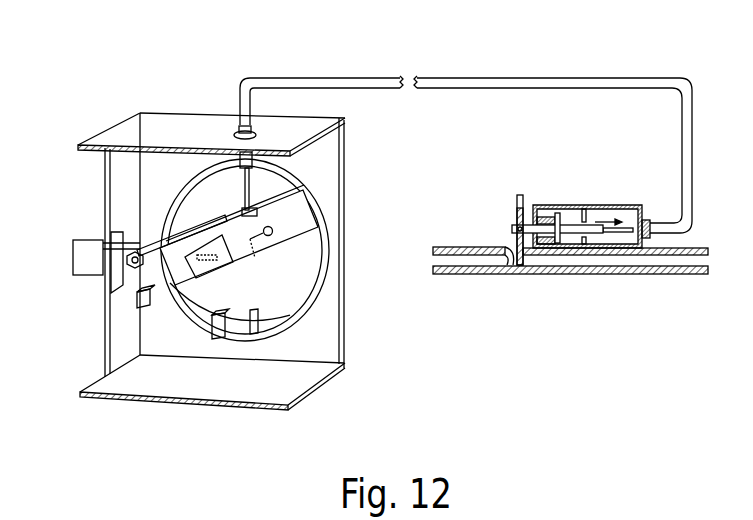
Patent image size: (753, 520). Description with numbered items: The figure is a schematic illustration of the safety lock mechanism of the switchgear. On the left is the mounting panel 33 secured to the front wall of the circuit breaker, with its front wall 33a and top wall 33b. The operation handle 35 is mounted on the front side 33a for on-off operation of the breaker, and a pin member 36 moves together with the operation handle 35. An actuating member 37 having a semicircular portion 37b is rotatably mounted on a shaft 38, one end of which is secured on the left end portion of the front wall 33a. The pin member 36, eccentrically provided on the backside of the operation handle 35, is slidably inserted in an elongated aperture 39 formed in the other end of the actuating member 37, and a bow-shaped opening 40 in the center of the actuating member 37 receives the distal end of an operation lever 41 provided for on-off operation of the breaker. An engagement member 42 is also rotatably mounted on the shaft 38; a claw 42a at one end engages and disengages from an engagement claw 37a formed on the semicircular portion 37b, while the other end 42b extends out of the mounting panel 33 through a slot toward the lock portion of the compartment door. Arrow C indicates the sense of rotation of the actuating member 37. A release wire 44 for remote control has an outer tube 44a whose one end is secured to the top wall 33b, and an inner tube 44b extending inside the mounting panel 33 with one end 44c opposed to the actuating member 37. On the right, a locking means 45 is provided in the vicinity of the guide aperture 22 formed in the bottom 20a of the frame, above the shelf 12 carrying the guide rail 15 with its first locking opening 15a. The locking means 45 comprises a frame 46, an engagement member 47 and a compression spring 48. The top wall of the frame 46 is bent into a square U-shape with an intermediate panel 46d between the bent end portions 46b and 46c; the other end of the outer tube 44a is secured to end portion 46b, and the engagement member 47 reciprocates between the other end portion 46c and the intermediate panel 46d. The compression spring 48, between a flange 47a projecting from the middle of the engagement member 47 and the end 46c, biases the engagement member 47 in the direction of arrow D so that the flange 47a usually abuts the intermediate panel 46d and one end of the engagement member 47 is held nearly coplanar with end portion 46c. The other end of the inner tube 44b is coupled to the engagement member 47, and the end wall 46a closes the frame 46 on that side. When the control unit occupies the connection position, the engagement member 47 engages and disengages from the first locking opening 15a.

The shelf 12 is at (455, 274).
The guide rail 15 is at (527, 215).
The first locking opening 15a is at (518, 222).
The bottom of the frame 20a is at (458, 247).
The guide aperture 22 is at (507, 274).
The mounting panel 33 is at (112, 118).
The front wall of the mounting panel 33a is at (148, 333).
The top wall of the mounting panel 33b is at (145, 124).
The operation handle 35 is at (332, 378).
The pin member 36 is at (297, 255).
The actuating member 37 is at (302, 213).
The engagement claw 37a is at (247, 323).
The semicircular portion 37b is at (272, 310).
The shaft 38 is at (122, 280).
The elongated aperture 39 is at (275, 287).
The bow-shaped opening 40 is at (183, 247).
The operation lever 41 is at (205, 245).
The engagement member 42 is at (160, 325).
The claw 42a is at (215, 322).
The other end of the engagement member 42b is at (83, 248).
The release wire 44 is at (460, 72).
The outer tube 44a is at (348, 77).
The inner tube 44b is at (342, 137).
The end of the inner tube 44c is at (238, 210).
The locking means 45 is at (614, 180).
The frame 46 is at (588, 207).
The cylinder end wall 46a is at (618, 205).
The bent end portion 46b is at (645, 250).
The other end portion 46c is at (530, 212).
The intermediate panel 46d is at (586, 244).
The engagement member 47 is at (515, 230).
The flange 47a is at (562, 244).
The compression spring 48 is at (542, 255).
The direction of rotation C is at (313, 175).
The direction of arrow D is at (646, 214).